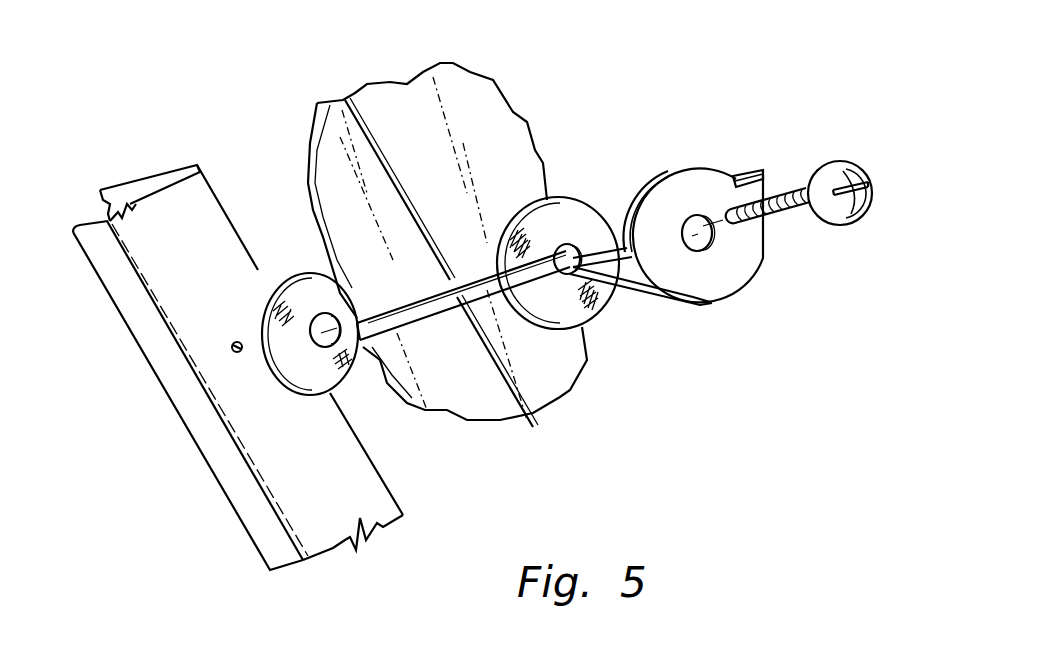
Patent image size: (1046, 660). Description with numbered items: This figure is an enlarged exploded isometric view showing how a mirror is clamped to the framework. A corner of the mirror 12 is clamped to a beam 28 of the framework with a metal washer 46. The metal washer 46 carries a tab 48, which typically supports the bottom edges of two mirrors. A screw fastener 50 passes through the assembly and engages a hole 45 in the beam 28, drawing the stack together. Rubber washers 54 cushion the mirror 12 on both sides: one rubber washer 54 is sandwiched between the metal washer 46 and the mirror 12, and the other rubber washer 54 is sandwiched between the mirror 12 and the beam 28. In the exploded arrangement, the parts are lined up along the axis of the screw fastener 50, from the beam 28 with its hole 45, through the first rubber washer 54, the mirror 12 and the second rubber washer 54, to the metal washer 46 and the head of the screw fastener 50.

The mirror 12 is at (470, 117).
The beam 28 is at (183, 315).
The hole 45 is at (257, 343).
The metal washer 46 is at (677, 192).
The tab 48 is at (747, 173).
The screw fastener 50 is at (827, 177).
The rubber washer 54 is at (293, 293).